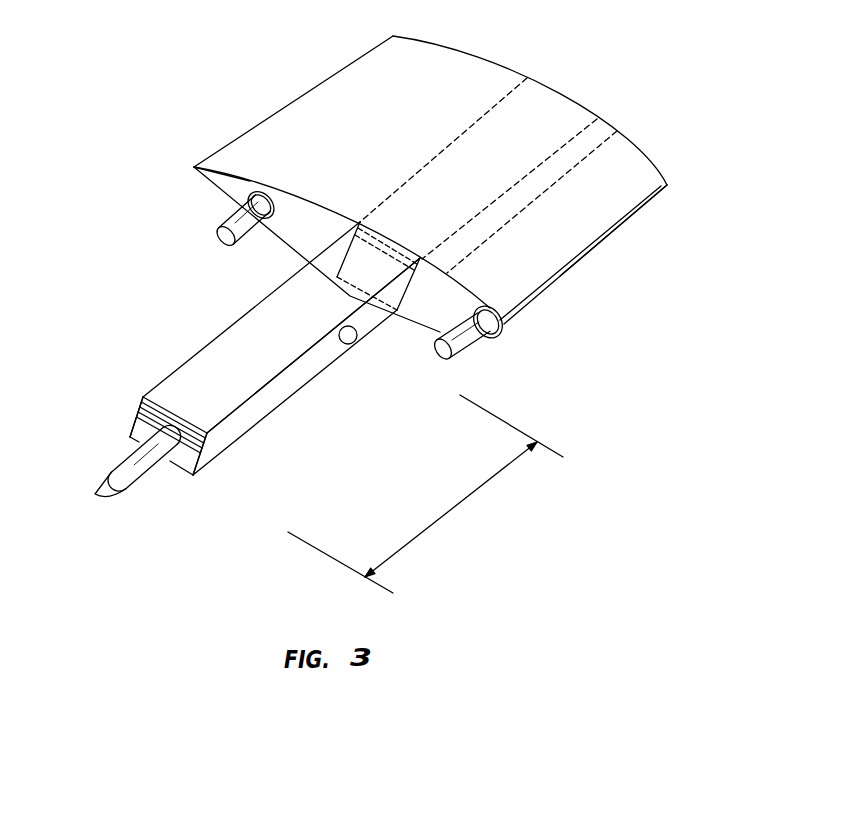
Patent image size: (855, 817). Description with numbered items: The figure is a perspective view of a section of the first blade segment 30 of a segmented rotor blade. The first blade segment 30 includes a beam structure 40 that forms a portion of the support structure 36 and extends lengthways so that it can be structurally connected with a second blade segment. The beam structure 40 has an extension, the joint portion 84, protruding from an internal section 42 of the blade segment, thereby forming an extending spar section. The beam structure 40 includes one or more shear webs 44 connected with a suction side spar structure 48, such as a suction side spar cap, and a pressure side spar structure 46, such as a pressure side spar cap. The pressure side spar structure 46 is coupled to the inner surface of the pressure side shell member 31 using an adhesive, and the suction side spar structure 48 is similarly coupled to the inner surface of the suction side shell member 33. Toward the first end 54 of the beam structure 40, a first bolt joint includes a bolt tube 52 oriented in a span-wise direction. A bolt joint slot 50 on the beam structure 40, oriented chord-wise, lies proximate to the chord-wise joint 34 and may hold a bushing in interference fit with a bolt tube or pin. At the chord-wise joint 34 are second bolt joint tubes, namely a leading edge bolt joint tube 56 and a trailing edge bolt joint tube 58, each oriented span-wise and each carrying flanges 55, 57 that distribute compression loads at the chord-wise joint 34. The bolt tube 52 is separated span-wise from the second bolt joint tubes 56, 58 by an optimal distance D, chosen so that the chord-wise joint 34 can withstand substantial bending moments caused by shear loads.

The first blade segment 30 is at (291, 108).
The pressure side shell member 31 is at (292, 234).
The suction side shell member 33 is at (636, 163).
The chord-wise joint 34 is at (220, 193).
The support structure 36 is at (297, 412).
The beam structure 40 is at (170, 386).
The internal section 42 is at (560, 104).
The shear web 44 is at (332, 361).
The pressure side spar structure 46 is at (345, 293).
The suction side spar structure 48 is at (386, 244).
The bolt joint slot 50 is at (350, 337).
The bolt tube 52 is at (145, 476).
The first end 54 is at (210, 472).
The flange 55 is at (492, 310).
The leading edge bolt joint tube 56 is at (445, 358).
The flange 57 is at (270, 191).
The trailing edge bolt joint tube 58 is at (222, 238).
The joint portion 84 is at (112, 278).
The optimal distance D is at (425, 494).